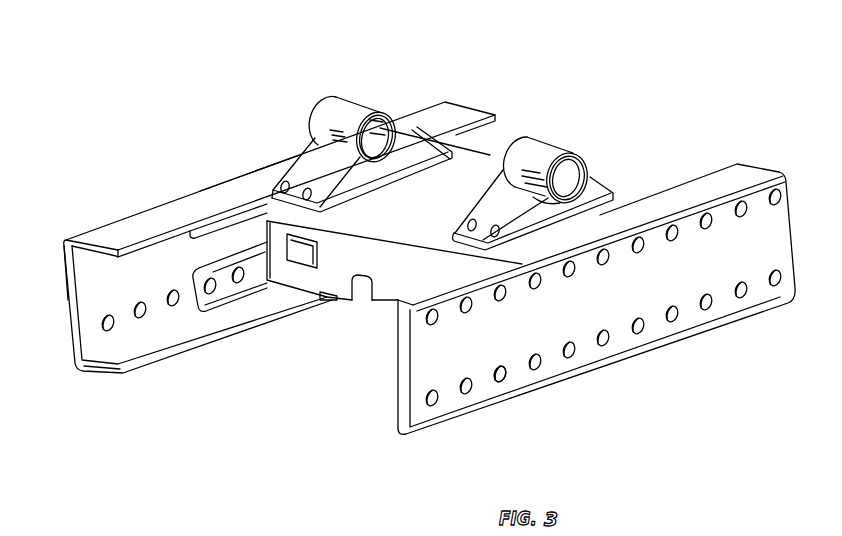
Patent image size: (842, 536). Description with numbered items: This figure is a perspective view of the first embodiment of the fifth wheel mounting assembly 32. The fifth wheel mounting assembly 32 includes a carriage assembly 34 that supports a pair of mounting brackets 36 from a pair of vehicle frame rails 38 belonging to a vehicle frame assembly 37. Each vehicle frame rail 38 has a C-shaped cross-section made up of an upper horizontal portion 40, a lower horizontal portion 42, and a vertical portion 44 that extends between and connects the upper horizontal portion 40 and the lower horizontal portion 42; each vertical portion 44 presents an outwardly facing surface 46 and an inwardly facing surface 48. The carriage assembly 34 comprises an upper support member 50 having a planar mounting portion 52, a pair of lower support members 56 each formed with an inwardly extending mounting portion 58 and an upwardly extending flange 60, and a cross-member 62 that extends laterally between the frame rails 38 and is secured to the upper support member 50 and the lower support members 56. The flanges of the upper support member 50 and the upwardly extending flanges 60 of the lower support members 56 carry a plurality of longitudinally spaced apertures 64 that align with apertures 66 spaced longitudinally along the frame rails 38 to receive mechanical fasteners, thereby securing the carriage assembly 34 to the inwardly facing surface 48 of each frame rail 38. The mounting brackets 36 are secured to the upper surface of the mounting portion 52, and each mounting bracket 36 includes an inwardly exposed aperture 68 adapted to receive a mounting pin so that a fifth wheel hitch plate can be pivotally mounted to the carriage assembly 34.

The fifth wheel mounting assembly 32 is at (410, 250).
The carriage assembly 34 is at (320, 306).
The mounting brackets 36 is at (315, 95).
The vehicle frame assembly 37 is at (104, 220).
The vehicle frame rails 38 is at (254, 162).
The upper horizontal portion 40 is at (185, 210).
The lower horizontal portion 42 is at (148, 345).
The vertical portion 44 is at (70, 322).
The outwardly facing surface 46 is at (475, 340).
The inwardly facing surface 48 is at (90, 280).
The upper support member 50 is at (472, 187).
The planar mounting portion 52 is at (500, 160).
The lower support members 56 is at (262, 316).
The inwardly extending mounting portion 58 is at (258, 297).
The upwardly extending flange 60 is at (200, 290).
The cross-member 62 is at (372, 292).
The apertures 64 is at (213, 290).
The apertures 66 is at (508, 378).
The inwardly exposed aperture 68 is at (403, 120).